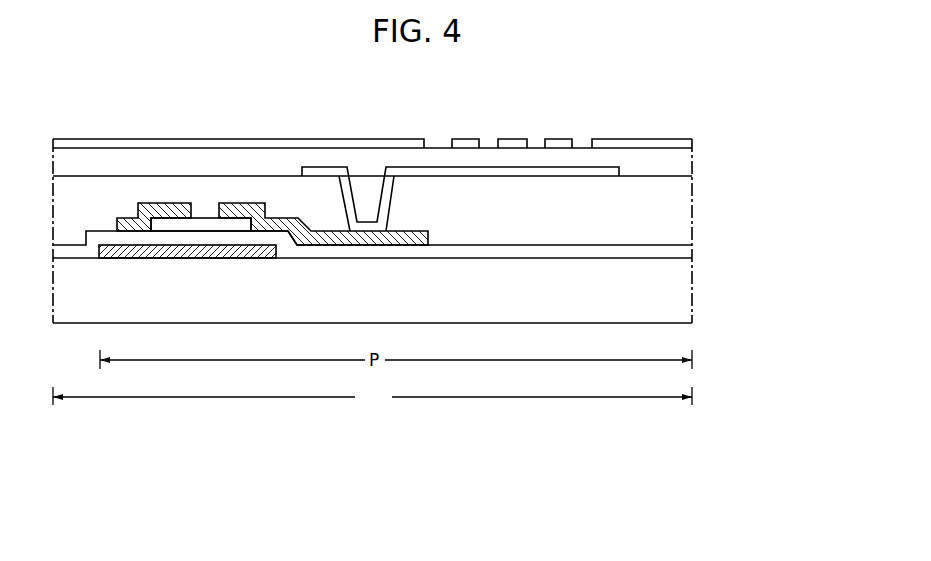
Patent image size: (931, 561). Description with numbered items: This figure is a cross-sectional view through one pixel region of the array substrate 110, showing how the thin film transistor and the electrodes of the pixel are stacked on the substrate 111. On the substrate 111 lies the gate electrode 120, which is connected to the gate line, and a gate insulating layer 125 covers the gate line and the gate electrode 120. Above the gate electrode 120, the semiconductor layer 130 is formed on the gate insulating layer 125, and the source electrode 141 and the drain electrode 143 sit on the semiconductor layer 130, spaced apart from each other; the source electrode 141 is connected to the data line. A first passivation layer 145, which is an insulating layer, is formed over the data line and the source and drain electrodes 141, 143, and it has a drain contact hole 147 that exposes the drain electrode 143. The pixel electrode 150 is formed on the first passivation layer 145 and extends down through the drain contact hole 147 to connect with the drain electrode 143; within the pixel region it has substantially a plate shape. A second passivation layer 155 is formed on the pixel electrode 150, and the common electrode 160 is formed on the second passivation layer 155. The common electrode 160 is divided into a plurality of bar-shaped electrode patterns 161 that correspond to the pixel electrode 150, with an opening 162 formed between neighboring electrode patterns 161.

The array substrate 110 is at (392, 480).
The substrate 111 is at (682, 290).
The gate electrode 120 is at (242, 252).
The gate insulating layer 125 is at (682, 252).
The semiconductor layer 130 is at (168, 224).
The source electrode 141 is at (165, 203).
The drain electrode 143 is at (239, 203).
The first passivation layer 145 is at (682, 208).
The drain contact hole 147 is at (366, 190).
The pixel electrode 150 is at (409, 168).
The second passivation layer 155 is at (682, 168).
The common electrode 160 is at (682, 146).
The electrode patterns 161 is at (559, 145).
The opening 162 is at (487, 138).